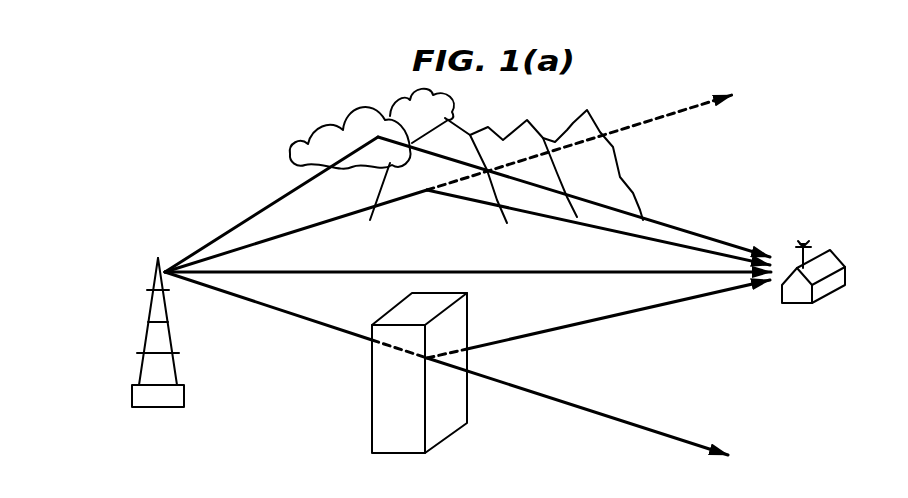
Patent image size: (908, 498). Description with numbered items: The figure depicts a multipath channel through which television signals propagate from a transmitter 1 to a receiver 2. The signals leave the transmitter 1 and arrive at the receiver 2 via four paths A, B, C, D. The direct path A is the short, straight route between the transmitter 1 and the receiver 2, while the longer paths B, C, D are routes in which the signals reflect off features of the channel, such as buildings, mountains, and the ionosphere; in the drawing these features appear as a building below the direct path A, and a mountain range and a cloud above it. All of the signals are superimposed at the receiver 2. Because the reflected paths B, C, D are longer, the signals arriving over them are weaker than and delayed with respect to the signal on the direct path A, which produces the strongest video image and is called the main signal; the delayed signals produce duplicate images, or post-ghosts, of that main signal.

The transmitter 1 is at (163, 272).
The receiver 2 is at (845, 263).
The direct path A is at (671, 272).
The reflected path B is at (666, 303).
The reflected path C is at (608, 231).
The reflected path D is at (716, 240).